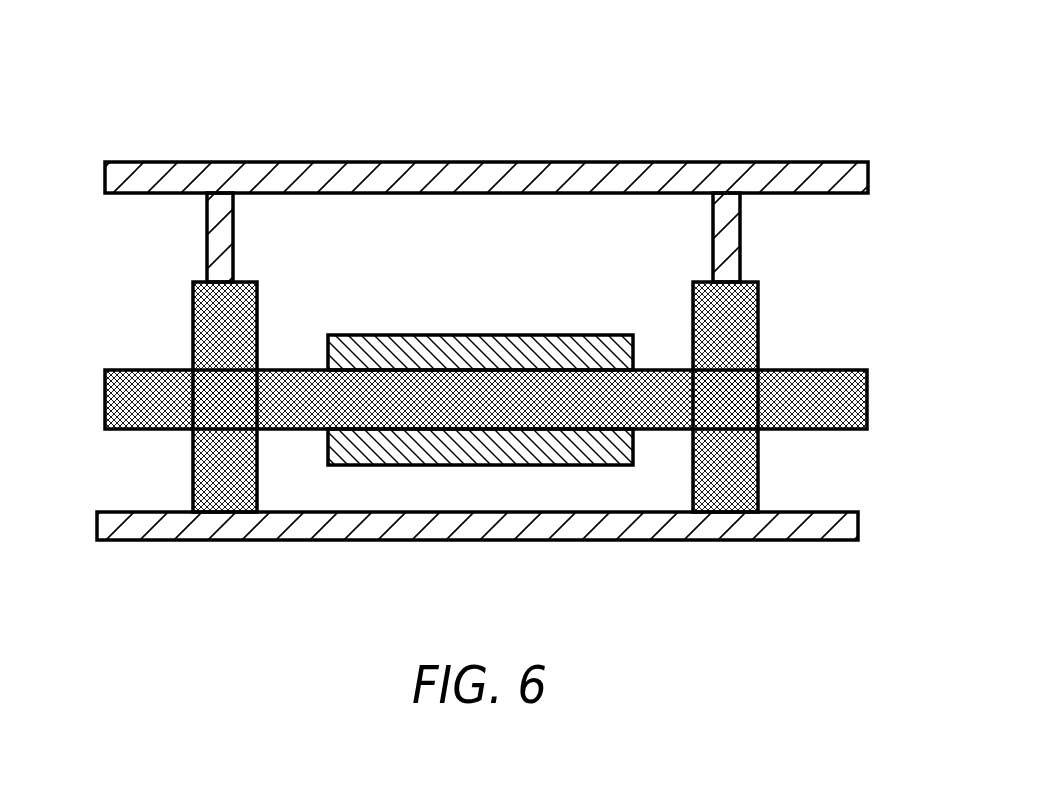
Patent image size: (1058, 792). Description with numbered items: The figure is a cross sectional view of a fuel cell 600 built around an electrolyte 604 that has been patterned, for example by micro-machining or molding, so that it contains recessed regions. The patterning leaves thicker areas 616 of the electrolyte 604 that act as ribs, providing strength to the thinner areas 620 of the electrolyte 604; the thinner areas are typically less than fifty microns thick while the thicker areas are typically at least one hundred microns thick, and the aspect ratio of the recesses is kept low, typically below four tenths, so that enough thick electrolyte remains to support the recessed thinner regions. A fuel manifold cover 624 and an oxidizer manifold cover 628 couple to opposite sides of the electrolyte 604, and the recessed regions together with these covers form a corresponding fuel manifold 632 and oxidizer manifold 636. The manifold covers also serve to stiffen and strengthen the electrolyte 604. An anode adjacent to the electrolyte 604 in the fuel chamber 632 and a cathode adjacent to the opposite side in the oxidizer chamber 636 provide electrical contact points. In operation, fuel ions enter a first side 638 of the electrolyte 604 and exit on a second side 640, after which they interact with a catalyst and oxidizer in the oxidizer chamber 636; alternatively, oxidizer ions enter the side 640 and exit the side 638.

The fuel cell 600 is at (765, 80).
The electrolyte 604 is at (103, 407).
The thicker areas 616 is at (192, 327).
The thinner areas 620 is at (675, 388).
The fuel manifold cover 624 is at (572, 162).
The oxidizer manifold cover 628 is at (597, 525).
The fuel manifold 632 is at (435, 237).
The oxidizer manifold 636 is at (465, 483).
The first side of electrolyte 638 is at (285, 370).
The second side of electrolyte 640 is at (290, 430).